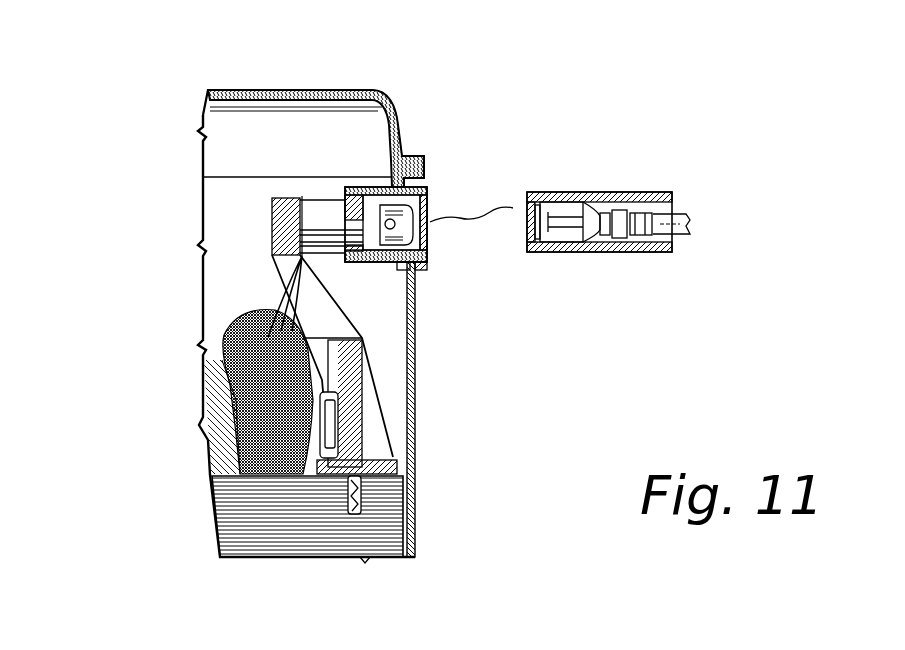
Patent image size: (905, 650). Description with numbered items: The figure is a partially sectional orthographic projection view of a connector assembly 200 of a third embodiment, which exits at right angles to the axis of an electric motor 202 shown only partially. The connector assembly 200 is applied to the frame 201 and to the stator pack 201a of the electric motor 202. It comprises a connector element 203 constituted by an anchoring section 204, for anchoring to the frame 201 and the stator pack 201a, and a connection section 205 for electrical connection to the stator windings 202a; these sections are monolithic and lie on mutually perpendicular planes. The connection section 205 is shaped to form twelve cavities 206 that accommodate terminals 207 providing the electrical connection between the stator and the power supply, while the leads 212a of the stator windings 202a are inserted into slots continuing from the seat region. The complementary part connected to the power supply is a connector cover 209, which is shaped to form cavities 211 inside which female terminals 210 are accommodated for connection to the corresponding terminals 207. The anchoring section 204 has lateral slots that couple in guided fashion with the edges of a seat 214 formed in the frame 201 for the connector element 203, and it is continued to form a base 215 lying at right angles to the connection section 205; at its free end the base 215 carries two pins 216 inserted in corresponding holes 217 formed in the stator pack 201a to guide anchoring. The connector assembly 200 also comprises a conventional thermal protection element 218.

The connector assembly 200 is at (344, 313).
The frame 201 is at (263, 90).
The stator pack 201a is at (241, 543).
The electric motor 202 is at (186, 403).
The stator windings 202a is at (253, 353).
The connector element 203 is at (388, 274).
The anchoring section 204 is at (396, 382).
The connection section 205 is at (366, 178).
The cavities 206 is at (425, 198).
The terminals 207 is at (402, 228).
The connector cover 209 is at (653, 211).
The female terminals 210 is at (565, 210).
The cavities 211 is at (647, 243).
The leads 212a is at (278, 262).
The seat 214 is at (393, 182).
The base 215 is at (362, 415).
The pins 216 is at (353, 497).
The holes 217 is at (367, 456).
The thermal protection element 218 is at (328, 442).